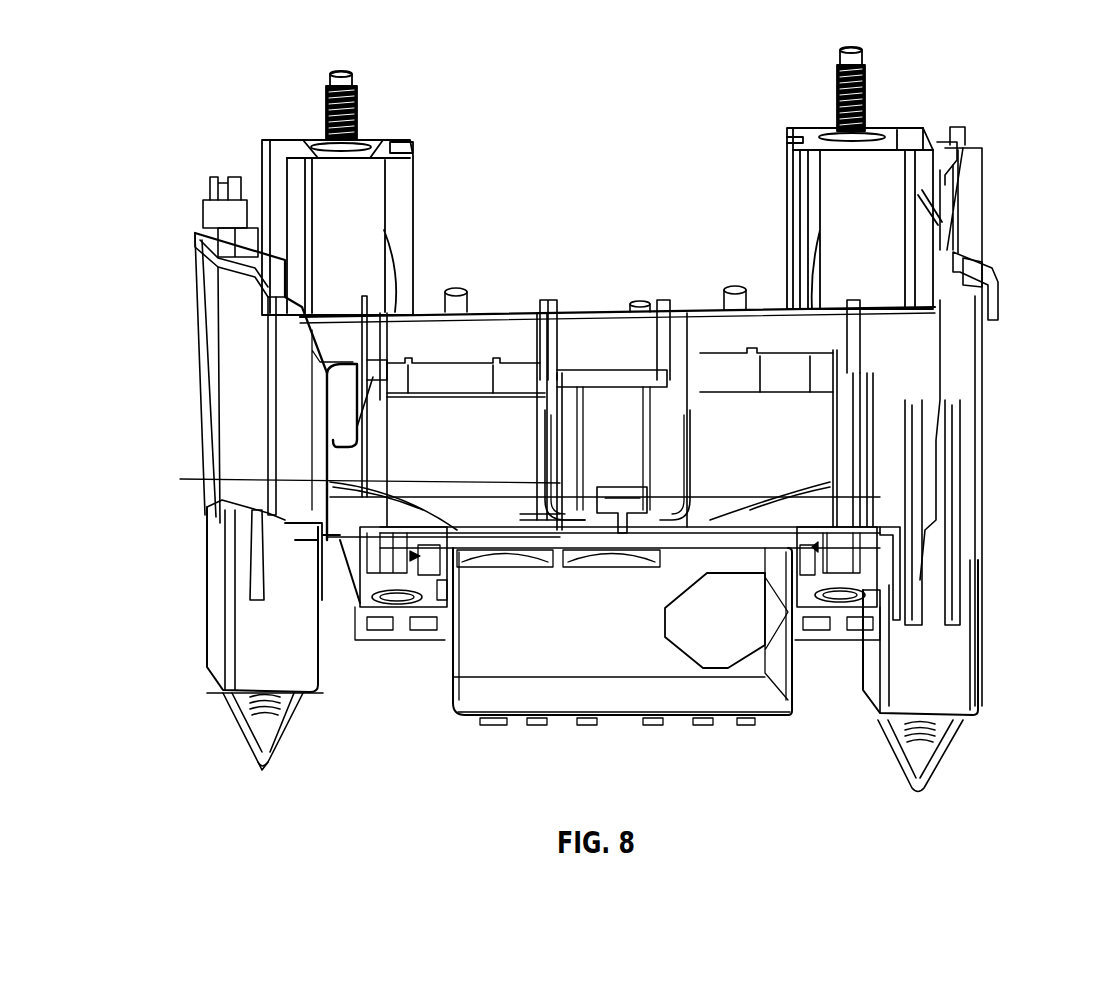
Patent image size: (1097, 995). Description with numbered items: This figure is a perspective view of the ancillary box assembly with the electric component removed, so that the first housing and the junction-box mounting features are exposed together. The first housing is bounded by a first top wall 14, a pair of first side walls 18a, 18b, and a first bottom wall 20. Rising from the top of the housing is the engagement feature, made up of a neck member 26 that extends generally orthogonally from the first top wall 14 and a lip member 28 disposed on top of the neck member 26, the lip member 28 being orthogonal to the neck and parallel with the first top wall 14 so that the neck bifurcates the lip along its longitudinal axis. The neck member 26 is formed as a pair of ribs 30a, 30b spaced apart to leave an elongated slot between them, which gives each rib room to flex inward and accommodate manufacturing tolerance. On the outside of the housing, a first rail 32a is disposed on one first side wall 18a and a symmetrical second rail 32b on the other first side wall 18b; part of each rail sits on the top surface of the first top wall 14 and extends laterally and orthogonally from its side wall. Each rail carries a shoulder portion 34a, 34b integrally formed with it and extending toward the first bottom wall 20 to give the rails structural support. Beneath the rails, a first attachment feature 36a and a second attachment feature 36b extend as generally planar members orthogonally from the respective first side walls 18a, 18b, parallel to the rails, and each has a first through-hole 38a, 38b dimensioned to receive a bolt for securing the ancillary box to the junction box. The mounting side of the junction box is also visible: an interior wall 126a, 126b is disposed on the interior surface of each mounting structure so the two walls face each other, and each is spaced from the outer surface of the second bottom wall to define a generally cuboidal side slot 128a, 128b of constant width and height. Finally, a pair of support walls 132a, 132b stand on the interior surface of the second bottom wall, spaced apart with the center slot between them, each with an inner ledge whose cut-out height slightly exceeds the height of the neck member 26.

The first top wall 14 is at (325, 480).
The first side wall 18a is at (797, 687).
The first side wall 18b is at (450, 690).
The first bottom wall 20 is at (718, 725).
The neck member 26 is at (593, 540).
The lip member 28 is at (613, 497).
The rib 30a is at (647, 540).
The rib 30b is at (618, 530).
The first rail 32a is at (800, 543).
The second rail 32b is at (285, 523).
The shoulder portion 34a is at (797, 567).
The shoulder portion 34b is at (457, 593).
The first attachment feature 36a is at (857, 613).
The second attachment feature 36b is at (372, 623).
The first through-hole 38a is at (847, 613).
The first through-hole 38b is at (402, 600).
The interior wall 126a is at (812, 586).
The interior wall 126b is at (447, 590).
The side slot 128a is at (818, 547).
The side slot 128b is at (410, 556).
The support wall 132a is at (680, 513).
The support wall 132b is at (585, 520).